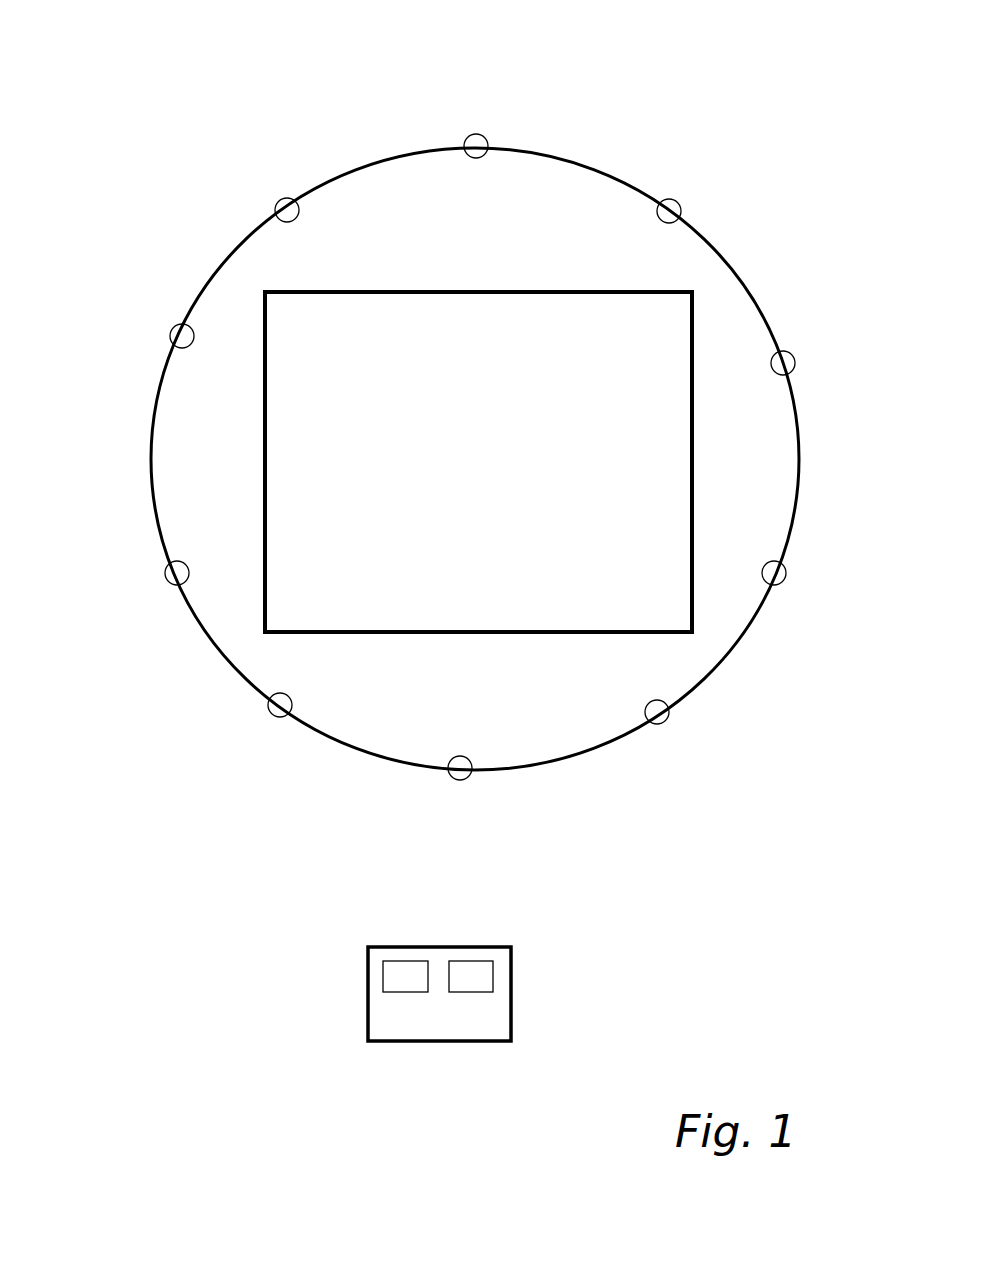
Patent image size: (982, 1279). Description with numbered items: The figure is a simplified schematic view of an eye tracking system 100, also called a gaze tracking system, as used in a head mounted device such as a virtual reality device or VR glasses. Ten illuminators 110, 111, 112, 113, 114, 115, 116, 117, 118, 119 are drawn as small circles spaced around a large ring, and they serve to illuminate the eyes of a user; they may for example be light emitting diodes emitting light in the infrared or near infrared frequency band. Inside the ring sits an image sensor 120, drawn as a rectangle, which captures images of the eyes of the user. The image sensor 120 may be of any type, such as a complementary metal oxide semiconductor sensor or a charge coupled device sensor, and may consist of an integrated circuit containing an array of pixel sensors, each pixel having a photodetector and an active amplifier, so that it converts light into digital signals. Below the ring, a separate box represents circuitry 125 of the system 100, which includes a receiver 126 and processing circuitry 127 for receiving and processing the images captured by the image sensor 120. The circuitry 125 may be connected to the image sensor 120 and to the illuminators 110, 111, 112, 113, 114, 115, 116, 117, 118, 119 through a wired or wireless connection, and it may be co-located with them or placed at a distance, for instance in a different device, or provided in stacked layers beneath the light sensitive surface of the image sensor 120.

The eye tracking system 100 is at (104, 790).
The illuminator 110 is at (180, 324).
The illuminator 111 is at (286, 198).
The illuminator 112 is at (474, 134).
The illuminator 113 is at (673, 198).
The illuminator 114 is at (787, 352).
The illuminator 115 is at (779, 586).
The illuminator 116 is at (661, 726).
The illuminator 117 is at (460, 782).
The illuminator 118 is at (278, 720).
The illuminator 119 is at (175, 588).
The image sensor 120 is at (500, 291).
The circuitry 125 is at (424, 1023).
The receiver 126 is at (393, 962).
The processing circuitry 127 is at (481, 962).